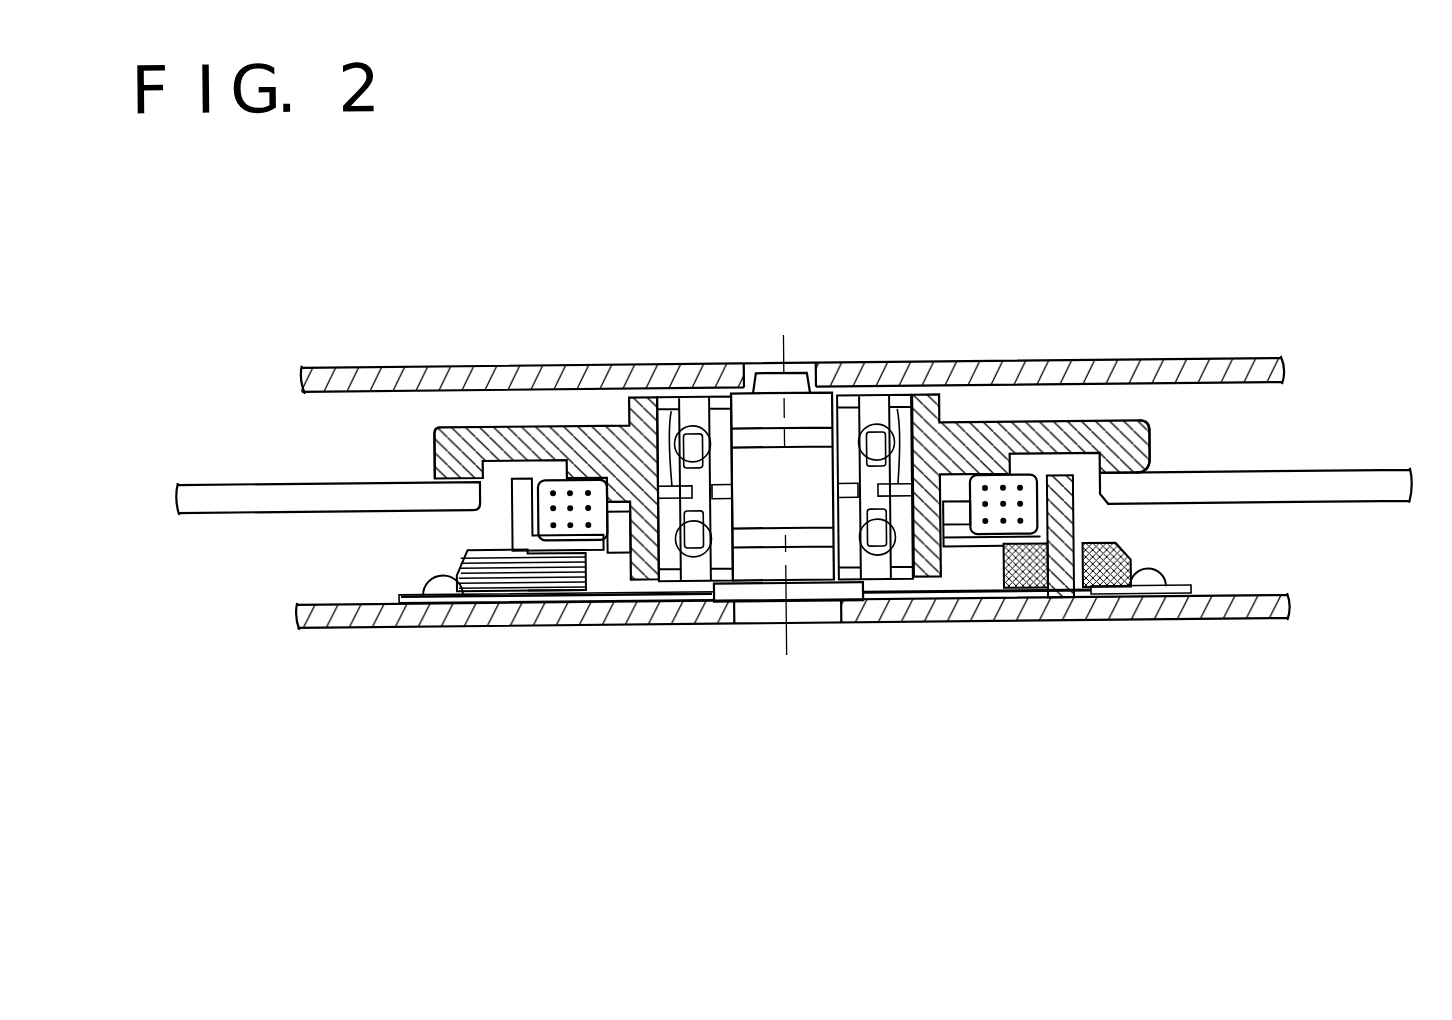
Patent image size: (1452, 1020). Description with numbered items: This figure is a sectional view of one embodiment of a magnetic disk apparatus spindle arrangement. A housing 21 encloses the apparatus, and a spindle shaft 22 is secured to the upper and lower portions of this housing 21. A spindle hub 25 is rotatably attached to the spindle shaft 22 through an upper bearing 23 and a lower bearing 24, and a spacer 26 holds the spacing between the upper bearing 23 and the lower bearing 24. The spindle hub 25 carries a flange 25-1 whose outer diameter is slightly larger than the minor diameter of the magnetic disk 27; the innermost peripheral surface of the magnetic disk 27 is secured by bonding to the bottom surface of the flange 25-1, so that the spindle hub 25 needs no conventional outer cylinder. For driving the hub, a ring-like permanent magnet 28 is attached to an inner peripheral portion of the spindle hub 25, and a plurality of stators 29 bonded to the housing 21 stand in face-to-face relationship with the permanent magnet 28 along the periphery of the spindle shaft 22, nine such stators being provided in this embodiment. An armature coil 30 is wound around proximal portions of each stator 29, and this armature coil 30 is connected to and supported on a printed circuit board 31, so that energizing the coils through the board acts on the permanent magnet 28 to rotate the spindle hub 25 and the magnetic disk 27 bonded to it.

The housing 21 is at (1146, 367).
The spindle shaft 22 is at (801, 415).
The upper bearing 23 is at (884, 406).
The lower bearing 24 is at (899, 566).
The spindle hub 25 is at (582, 426).
The flange 25-1 is at (436, 470).
The spacer 26 is at (673, 409).
The magnetic disk 27 is at (1298, 492).
The permanent magnet 28 is at (580, 521).
The stator 29 is at (510, 487).
The armature coil 30 is at (462, 597).
The printed circuit board 31 is at (546, 605).